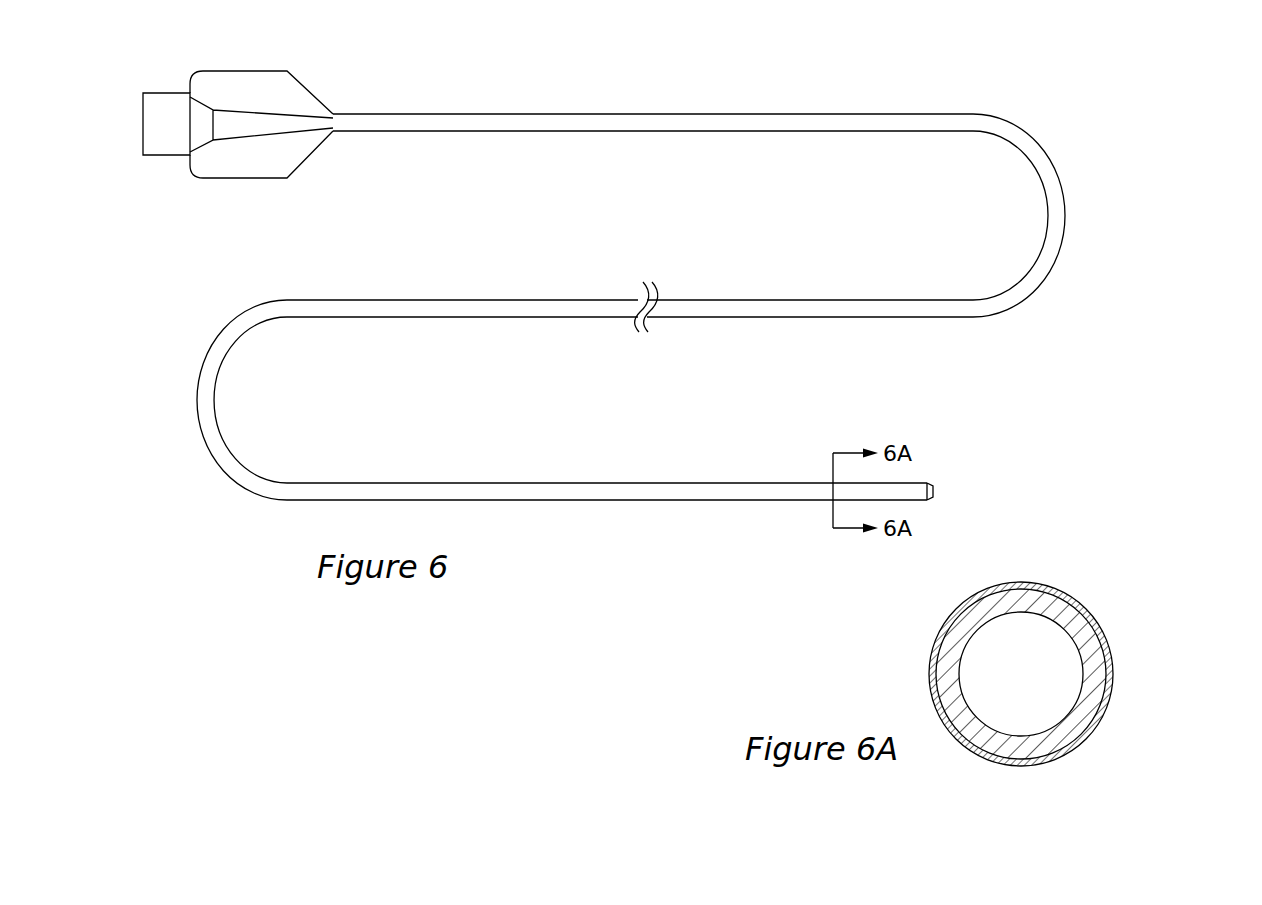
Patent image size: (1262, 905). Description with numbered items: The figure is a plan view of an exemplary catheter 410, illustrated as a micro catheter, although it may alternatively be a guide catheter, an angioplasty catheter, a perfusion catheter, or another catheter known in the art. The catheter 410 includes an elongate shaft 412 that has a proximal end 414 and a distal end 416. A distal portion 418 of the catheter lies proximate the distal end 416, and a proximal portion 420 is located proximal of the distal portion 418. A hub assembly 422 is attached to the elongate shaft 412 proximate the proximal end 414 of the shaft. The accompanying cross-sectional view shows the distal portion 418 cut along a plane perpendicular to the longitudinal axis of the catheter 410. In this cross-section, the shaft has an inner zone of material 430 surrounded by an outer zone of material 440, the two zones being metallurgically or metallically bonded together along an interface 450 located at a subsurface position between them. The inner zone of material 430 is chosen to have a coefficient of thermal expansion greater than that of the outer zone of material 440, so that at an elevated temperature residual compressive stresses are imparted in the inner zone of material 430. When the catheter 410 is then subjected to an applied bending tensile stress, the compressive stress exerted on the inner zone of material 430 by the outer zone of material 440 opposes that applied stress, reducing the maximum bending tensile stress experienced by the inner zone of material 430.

In FIG. 6, the catheter 410 is at (686, 73).
In FIG. 6, the elongate shaft 412 is at (1033, 254).
In FIG. 6, the proximal end 414 is at (342, 167).
In FIG. 6, the distal end 416 is at (939, 470).
In FIG. 6, the distal portion 418 is at (797, 470).
In FIG. 6, the proximal portion 420 is at (617, 274).
In FIG. 6, the hub assembly 422 is at (156, 183).
In FIG. 6A, the inner zone of material 430 is at (952, 670).
In FIG. 6A, the outer zone of material 440 is at (1038, 583).
In FIG. 6A, the interface 450 is at (1102, 707).